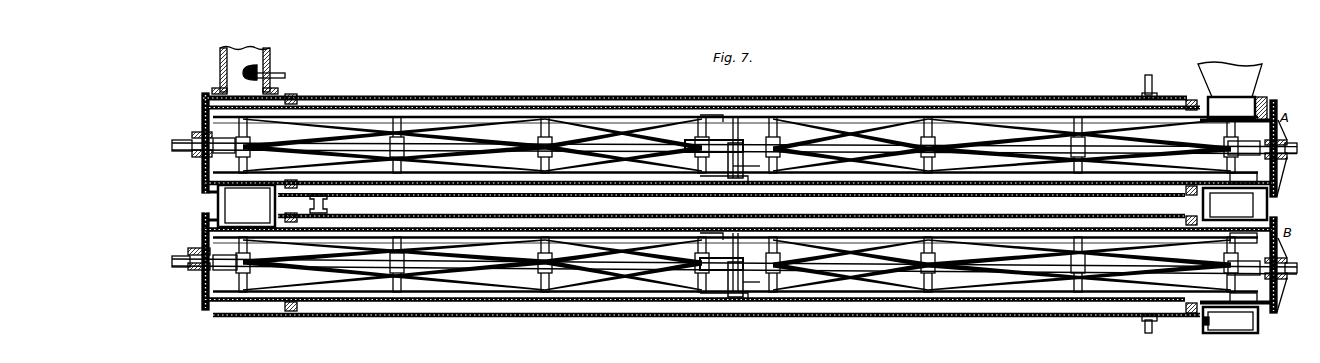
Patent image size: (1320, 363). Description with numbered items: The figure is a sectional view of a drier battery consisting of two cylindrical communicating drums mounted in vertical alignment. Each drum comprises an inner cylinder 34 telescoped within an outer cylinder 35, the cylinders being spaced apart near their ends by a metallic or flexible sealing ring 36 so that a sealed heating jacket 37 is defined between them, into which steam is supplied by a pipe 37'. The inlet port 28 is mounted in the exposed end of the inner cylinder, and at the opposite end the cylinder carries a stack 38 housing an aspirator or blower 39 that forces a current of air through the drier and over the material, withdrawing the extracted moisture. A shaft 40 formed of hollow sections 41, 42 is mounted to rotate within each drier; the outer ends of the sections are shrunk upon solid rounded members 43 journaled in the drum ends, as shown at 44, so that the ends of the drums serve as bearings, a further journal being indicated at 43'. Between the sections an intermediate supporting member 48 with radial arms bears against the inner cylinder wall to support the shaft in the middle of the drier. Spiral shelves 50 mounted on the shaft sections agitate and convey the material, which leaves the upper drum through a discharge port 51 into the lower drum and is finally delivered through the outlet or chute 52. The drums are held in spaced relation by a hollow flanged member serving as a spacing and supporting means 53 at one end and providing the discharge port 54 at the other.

The inlet port 28 is at (1232, 91).
The inner cylinder 34 is at (973, 110).
The outer cylinder 35 is at (917, 106).
The sealing ring 36 is at (293, 97).
The heating jacket 37 is at (739, 194).
The steam pipe 37' is at (1161, 202).
The stack 38 is at (220, 77).
The aspirator or blower 39 is at (252, 62).
The shaft 40 is at (737, 204).
The hollow shaft section 41 is at (1008, 149).
The hollow shaft section 42 is at (257, 144).
The solid rounded member 43 is at (742, 198).
The bearing bracket 43' is at (1193, 335).
The bearing 44 is at (196, 156).
The intermediate supporting member 48 is at (760, 166).
The spiral shelves 50 is at (642, 140).
The discharge port 51 is at (242, 206).
The outlet or chute 52 is at (1258, 328).
The spacing and supporting member 53 is at (1253, 205).
The discharge port 54 is at (309, 208).